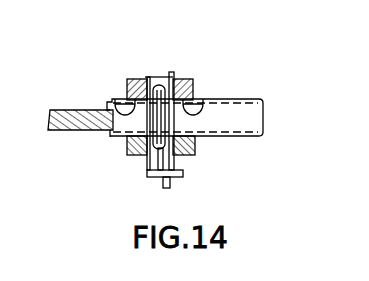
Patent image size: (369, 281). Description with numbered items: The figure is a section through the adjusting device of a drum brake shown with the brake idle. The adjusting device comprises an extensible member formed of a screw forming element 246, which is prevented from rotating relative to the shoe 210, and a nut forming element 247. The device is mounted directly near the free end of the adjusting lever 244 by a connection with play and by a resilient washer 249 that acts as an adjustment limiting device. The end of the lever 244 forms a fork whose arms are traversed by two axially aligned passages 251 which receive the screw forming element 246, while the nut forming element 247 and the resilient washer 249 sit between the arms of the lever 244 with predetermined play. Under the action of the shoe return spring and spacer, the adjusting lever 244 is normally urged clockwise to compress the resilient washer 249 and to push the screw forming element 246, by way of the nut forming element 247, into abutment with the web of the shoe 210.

The shoe 210 is at (64, 131).
The adjusting lever 244 is at (130, 157).
The screw forming element 246 is at (238, 116).
The nut forming element 247 is at (145, 76).
The resilient washer 249 is at (173, 71).
The passages 251 is at (116, 100).